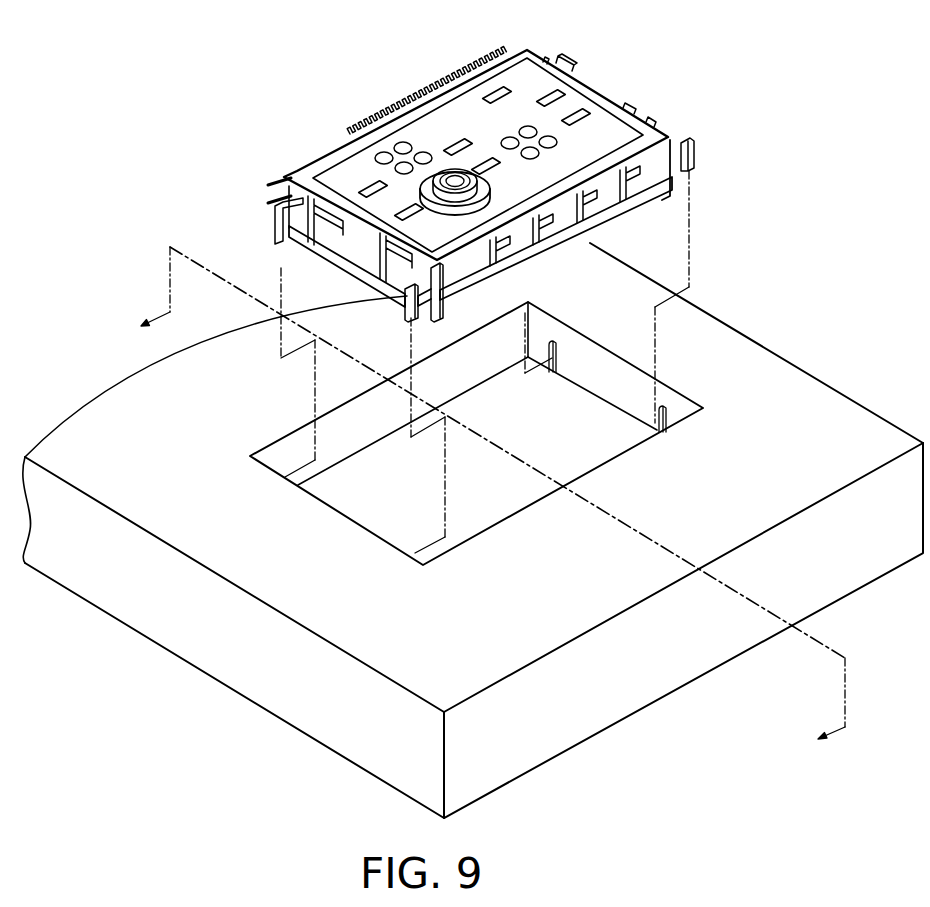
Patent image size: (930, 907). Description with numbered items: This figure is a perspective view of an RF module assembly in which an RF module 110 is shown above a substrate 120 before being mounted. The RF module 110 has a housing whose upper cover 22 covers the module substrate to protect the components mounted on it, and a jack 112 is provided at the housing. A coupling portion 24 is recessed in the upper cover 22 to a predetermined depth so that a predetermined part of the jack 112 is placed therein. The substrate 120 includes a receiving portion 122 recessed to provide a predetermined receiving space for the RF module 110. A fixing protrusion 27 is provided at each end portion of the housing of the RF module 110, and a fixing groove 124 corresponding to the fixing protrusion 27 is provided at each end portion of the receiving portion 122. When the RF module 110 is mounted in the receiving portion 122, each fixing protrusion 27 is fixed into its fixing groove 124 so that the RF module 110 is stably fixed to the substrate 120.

The RF module 110 is at (316, 133).
The upper cover 22 is at (483, 78).
The coupling portion 24 is at (429, 189).
The jack 112 is at (449, 187).
The fixing protrusion 27 is at (568, 61).
The substrate 120 is at (500, 776).
The receiving portion 122 is at (473, 516).
The fixing groove 124 is at (657, 403).